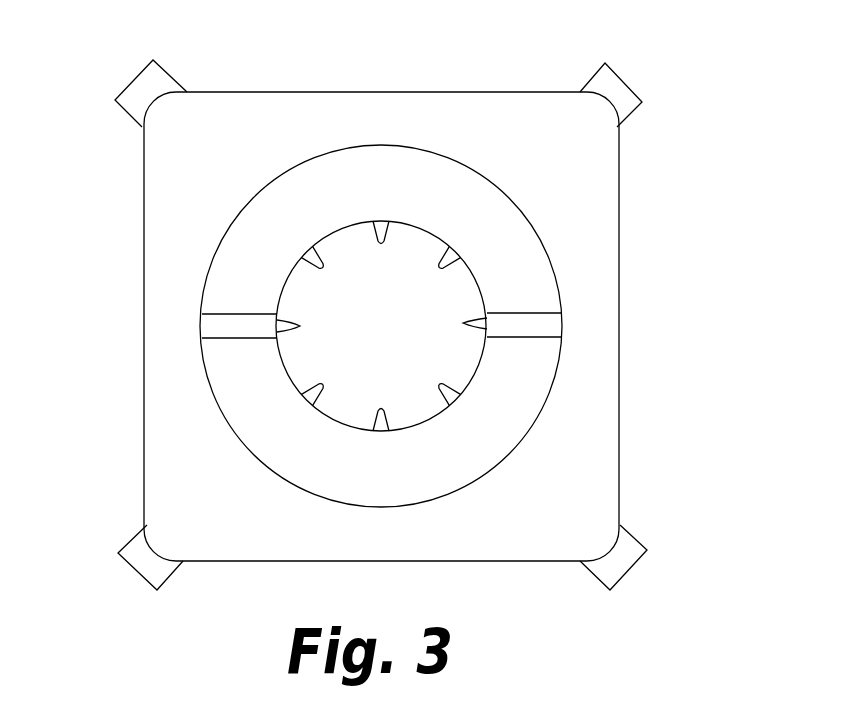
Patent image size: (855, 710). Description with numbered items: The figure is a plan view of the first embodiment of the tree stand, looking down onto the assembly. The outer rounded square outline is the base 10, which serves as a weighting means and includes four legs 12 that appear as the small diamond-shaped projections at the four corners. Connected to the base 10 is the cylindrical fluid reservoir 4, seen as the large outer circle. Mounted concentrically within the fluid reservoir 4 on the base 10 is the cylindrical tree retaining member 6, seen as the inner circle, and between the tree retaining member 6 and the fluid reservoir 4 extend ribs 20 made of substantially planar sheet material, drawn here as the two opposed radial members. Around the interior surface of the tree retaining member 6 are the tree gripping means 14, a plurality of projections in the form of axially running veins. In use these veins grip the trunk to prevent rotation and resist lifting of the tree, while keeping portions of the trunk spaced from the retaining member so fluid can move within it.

The base 10 is at (248, 122).
The legs 12 is at (140, 93).
The fluid reservoir 4 is at (202, 300).
The tree retaining member 6 is at (403, 222).
The tree gripping means 14 is at (455, 250).
The ribs 20 is at (237, 313).